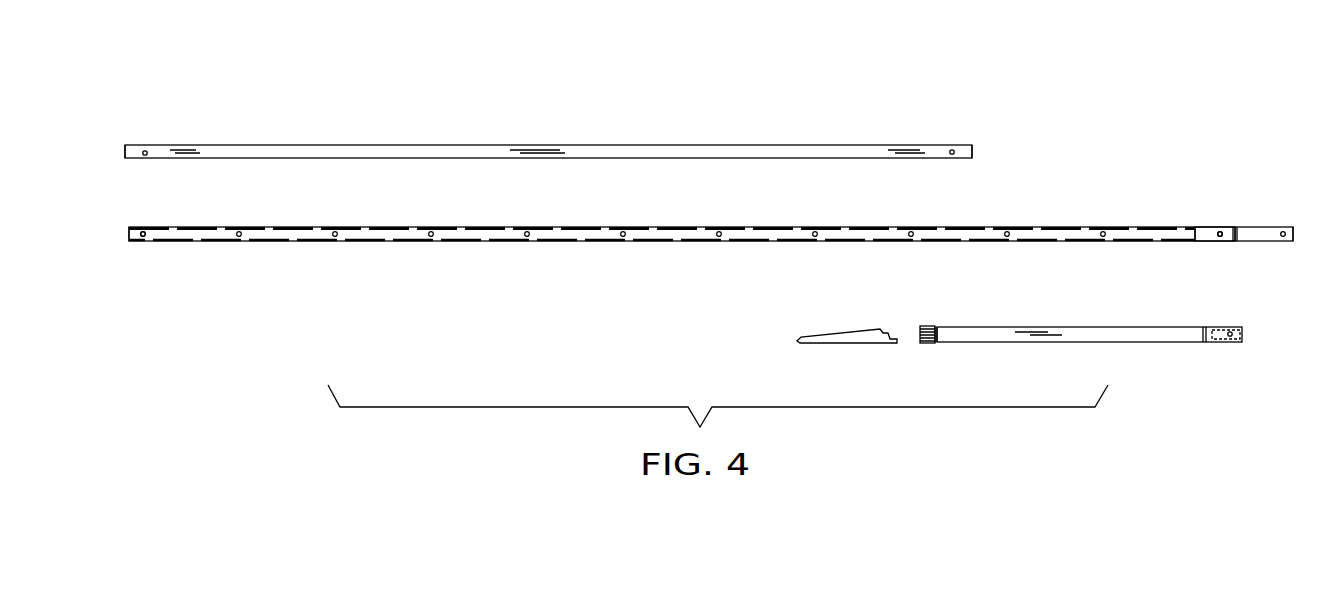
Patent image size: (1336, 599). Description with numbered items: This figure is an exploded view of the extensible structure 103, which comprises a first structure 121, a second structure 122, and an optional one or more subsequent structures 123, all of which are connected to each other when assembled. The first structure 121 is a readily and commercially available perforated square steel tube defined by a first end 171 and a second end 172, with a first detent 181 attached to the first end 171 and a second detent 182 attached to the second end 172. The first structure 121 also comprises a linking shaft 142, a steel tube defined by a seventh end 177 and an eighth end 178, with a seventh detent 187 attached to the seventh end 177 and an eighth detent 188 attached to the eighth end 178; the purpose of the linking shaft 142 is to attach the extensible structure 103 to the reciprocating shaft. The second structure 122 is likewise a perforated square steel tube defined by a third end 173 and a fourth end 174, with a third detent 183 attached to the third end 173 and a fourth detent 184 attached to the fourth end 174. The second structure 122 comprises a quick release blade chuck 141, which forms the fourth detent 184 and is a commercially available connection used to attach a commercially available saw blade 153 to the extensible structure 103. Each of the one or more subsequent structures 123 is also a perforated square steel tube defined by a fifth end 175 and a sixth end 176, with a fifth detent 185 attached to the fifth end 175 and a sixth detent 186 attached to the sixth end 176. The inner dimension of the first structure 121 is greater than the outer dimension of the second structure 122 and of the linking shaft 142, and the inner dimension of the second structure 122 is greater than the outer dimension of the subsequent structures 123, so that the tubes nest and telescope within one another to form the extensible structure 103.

The extensible structure 103 is at (300, 70).
The first structure 121 is at (1105, 226).
The second structure 122 is at (1143, 343).
The subsequent structure 123 is at (706, 145).
The quick release blade chuck 141 is at (927, 343).
The linking shaft 142 is at (1255, 227).
The saw blade 153 is at (850, 338).
The first end 171 is at (1235, 227).
The second end 172 is at (125, 238).
The third end 173 is at (1245, 334).
The fourth end 174 is at (937, 326).
The fifth end 175 is at (972, 152).
The sixth end 176 is at (124, 149).
The seventh end 177 is at (1293, 242).
The eighth end 178 is at (1237, 242).
The first detent 181 is at (1220, 230).
The second detent 182 is at (146, 232).
The third detent 183 is at (1232, 343).
The fourth detent 184 is at (922, 325).
The fifth detent 185 is at (951, 149).
The sixth detent 186 is at (148, 151).
The seventh detent 187 is at (1283, 230).
The eighth detent 188 is at (1220, 240).